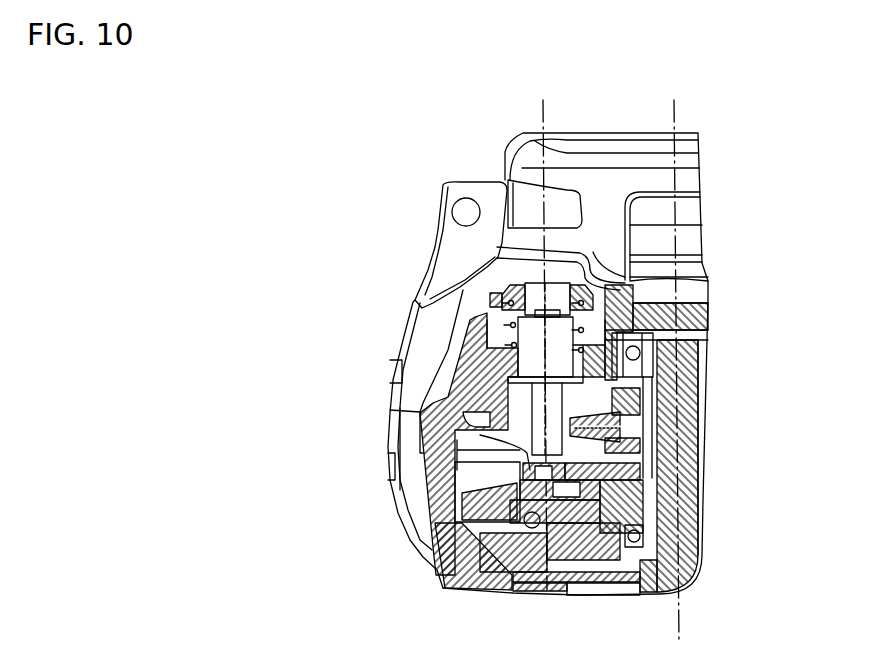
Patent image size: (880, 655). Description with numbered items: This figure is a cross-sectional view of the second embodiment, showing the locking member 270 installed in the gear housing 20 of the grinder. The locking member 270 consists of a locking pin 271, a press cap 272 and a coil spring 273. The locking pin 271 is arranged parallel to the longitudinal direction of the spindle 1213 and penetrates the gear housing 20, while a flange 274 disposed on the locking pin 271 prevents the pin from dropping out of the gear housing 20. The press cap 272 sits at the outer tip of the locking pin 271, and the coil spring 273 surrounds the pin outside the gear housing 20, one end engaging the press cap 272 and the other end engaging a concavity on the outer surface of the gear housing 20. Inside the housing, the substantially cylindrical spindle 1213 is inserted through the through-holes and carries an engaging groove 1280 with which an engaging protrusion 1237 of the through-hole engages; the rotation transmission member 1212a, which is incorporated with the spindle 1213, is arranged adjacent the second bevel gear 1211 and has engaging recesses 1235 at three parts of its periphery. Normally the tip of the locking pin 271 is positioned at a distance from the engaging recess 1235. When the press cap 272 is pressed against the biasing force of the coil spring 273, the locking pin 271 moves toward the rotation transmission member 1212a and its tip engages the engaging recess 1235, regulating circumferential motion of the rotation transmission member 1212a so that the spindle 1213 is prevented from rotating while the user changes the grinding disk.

The gear housing 20 is at (436, 486).
The locking member 270 is at (283, 165).
The locking pin 271 is at (542, 400).
The press cap 272 is at (537, 287).
The coil spring 273 is at (490, 292).
The flange 274 is at (510, 350).
The second bevel gear 1211 is at (550, 537).
The rotation transmission member 1212a is at (520, 505).
The spindle 1213 is at (703, 553).
The engaging recess 1235 is at (478, 432).
The engaging protrusion 1237 is at (655, 498).
The engaging groove 1280 is at (648, 473).